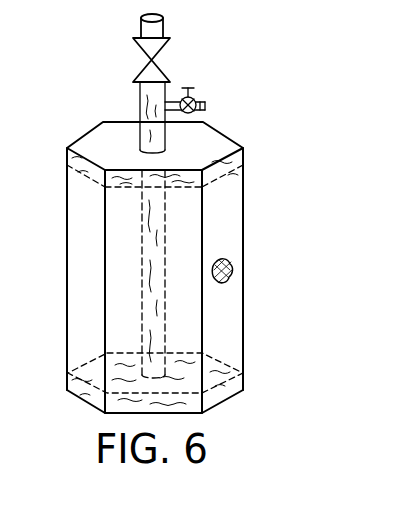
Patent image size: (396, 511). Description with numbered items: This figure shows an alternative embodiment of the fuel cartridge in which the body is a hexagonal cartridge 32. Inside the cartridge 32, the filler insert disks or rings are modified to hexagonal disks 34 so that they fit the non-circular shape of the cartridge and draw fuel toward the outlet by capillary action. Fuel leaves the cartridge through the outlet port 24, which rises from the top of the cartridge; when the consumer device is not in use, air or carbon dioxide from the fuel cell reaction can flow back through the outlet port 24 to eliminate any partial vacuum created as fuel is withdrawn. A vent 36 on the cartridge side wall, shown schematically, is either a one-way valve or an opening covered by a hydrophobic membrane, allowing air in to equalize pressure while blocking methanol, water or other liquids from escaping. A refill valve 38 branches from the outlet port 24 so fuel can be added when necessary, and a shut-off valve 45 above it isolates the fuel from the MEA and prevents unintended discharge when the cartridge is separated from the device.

The cartridge 32 is at (301, 181).
The outlet port 24 is at (142, 115).
The shut-off valve 45 is at (150, 43).
The refill valve 38 is at (195, 112).
The vent 36 is at (232, 266).
The hexagonal disks 34 is at (67, 387).